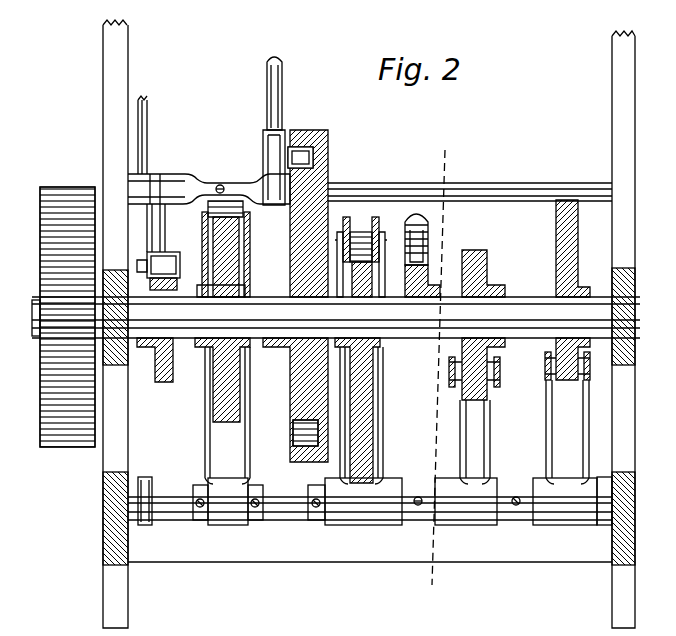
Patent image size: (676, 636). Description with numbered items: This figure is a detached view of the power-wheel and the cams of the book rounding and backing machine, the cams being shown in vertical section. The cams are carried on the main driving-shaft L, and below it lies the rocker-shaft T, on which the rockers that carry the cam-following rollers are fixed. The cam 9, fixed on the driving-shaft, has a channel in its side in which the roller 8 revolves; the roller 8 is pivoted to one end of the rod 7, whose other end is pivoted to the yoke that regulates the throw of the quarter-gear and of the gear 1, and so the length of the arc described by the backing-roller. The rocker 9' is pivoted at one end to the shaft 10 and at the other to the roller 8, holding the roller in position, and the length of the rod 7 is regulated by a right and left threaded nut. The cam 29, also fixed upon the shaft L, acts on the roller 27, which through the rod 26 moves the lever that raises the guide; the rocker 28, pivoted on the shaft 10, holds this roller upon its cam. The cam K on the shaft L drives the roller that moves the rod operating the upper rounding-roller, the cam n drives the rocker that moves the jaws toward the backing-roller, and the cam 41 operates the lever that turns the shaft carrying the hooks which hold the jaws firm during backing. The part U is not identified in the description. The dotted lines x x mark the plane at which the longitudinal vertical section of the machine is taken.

The gear 1 is at (222, 342).
The rod 7 is at (278, 80).
The roller 8 is at (300, 157).
The cam 9 is at (295, 296).
The rocker 9' is at (209, 150).
The shaft 10 is at (470, 192).
The rod 26 is at (140, 228).
The roller 27 is at (158, 271).
The rocker 28 is at (166, 233).
The cam 29 is at (155, 376).
The cam 41 is at (421, 314).
The cam n is at (362, 415).
The cam K is at (477, 355).
The bracket U is at (556, 236).
The main driving-shaft L is at (336, 317).
The rocker-shaft T is at (370, 501).
The section line x is at (435, 373).